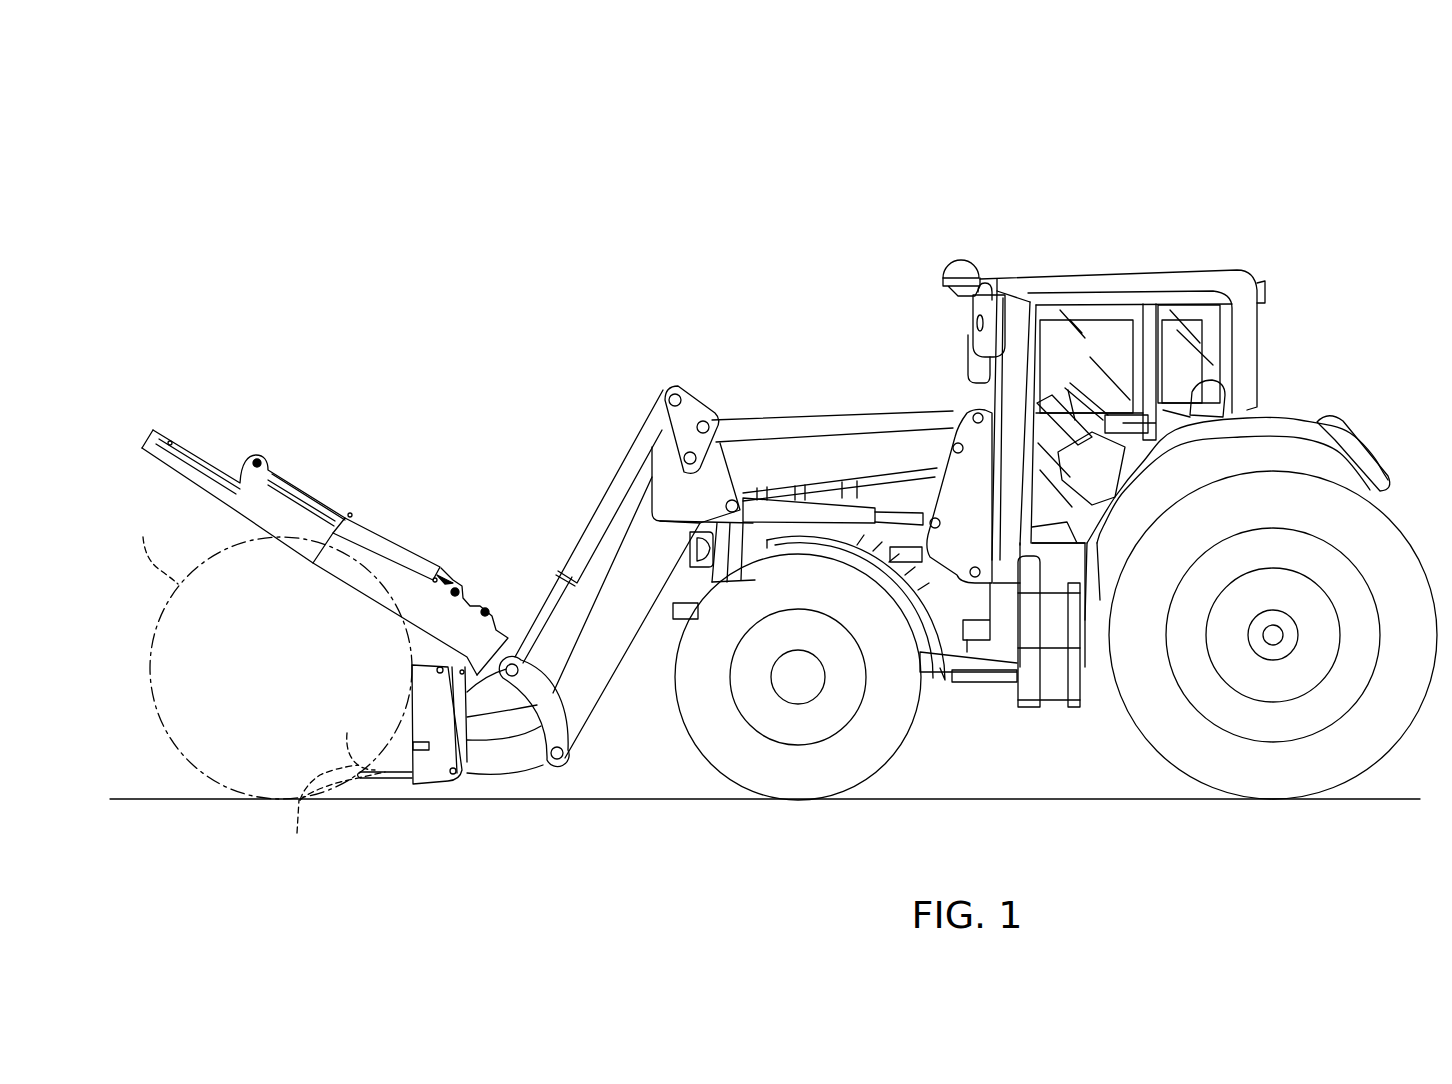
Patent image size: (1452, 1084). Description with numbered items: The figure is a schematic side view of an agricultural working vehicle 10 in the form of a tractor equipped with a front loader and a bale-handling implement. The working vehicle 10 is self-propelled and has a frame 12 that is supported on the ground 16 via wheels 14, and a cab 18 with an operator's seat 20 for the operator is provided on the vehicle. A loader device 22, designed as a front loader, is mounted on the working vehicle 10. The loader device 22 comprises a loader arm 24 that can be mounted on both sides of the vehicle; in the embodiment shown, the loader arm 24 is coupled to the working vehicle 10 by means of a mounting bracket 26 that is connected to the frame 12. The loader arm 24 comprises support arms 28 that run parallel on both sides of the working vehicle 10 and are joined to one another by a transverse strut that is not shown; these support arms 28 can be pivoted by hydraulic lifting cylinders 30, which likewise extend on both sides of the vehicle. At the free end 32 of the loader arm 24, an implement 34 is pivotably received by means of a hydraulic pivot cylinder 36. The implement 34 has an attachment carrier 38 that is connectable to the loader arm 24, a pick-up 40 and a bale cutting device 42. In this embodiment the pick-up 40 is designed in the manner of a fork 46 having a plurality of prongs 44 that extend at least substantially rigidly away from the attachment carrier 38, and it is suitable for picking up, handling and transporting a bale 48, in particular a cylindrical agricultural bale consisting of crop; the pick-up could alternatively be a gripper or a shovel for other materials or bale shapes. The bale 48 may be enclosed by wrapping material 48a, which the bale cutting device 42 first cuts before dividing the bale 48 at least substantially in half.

The agricultural working vehicle 10 is at (1150, 160).
The frame 12 is at (997, 695).
The wheels 14 is at (773, 766).
The ground 16 is at (1412, 802).
The cab 18 is at (1128, 347).
The operator's seat 20 is at (1223, 390).
The loader device 22 is at (570, 395).
The loader arm 24 is at (600, 633).
The mounting bracket 26 is at (968, 432).
The support arms 28 is at (812, 473).
The hydraulic lifting cylinders 30 is at (826, 517).
The free end 32 is at (456, 810).
The implement 34 is at (480, 592).
The hydraulic pivot cylinder 36 is at (572, 561).
The attachment carrier 38 is at (418, 726).
The pick-up 40 is at (378, 788).
The bale cutting device 42 is at (145, 432).
The prongs 44 is at (337, 751).
The fork 46 is at (331, 817).
The bale 48 is at (294, 666).
The wrapping material 48a is at (147, 547).